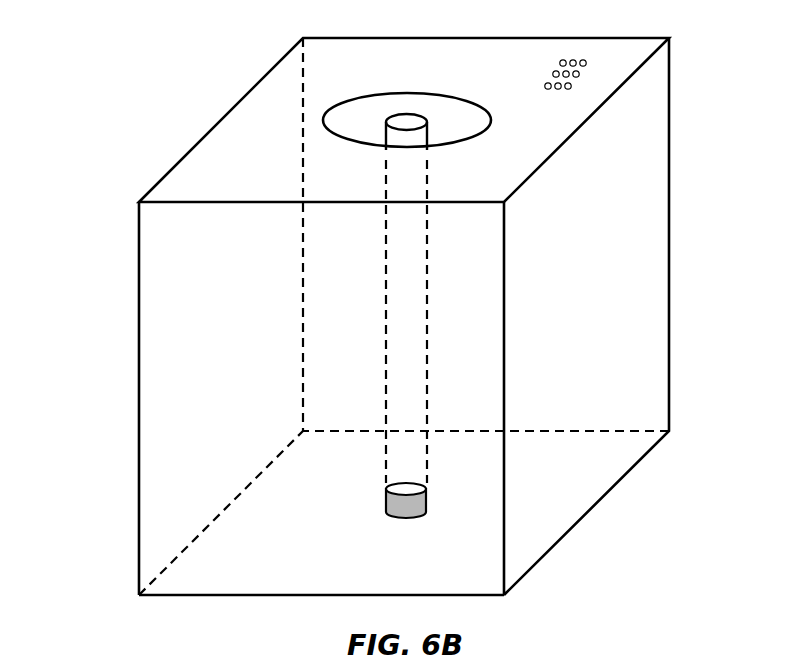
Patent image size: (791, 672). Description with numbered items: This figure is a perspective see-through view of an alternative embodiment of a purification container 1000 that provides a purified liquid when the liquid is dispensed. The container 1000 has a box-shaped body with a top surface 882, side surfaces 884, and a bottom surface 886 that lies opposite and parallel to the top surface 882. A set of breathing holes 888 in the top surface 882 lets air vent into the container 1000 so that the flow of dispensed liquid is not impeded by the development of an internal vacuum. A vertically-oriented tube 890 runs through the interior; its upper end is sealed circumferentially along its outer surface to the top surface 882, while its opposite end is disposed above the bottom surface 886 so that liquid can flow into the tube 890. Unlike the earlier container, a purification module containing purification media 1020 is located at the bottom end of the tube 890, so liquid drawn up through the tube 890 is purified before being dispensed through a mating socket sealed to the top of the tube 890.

The purification container 1000 is at (64, 68).
The top surface 882 is at (185, 180).
The side surfaces 884 is at (640, 247).
The bottom surface 886 is at (322, 555).
The breathing holes 888 is at (557, 72).
The tube 890 is at (425, 340).
The purification media 1020 is at (428, 507).